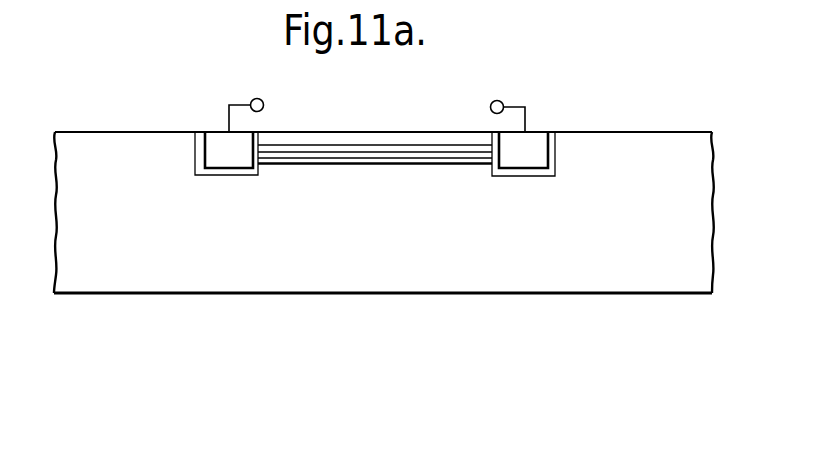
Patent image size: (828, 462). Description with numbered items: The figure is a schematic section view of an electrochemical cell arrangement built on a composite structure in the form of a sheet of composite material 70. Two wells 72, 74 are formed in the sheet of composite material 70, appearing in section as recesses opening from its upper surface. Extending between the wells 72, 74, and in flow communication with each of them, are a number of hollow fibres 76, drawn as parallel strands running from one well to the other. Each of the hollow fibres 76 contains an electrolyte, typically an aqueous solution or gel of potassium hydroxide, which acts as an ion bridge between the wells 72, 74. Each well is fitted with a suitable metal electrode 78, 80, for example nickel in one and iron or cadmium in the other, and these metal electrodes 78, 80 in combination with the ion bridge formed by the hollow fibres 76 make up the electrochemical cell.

The sheet of composite material 70 is at (338, 273).
The well 72 is at (223, 172).
The well 74 is at (525, 173).
The hollow fibres 76 is at (440, 155).
The metal electrode 78 is at (212, 138).
The metal electrode 80 is at (533, 140).